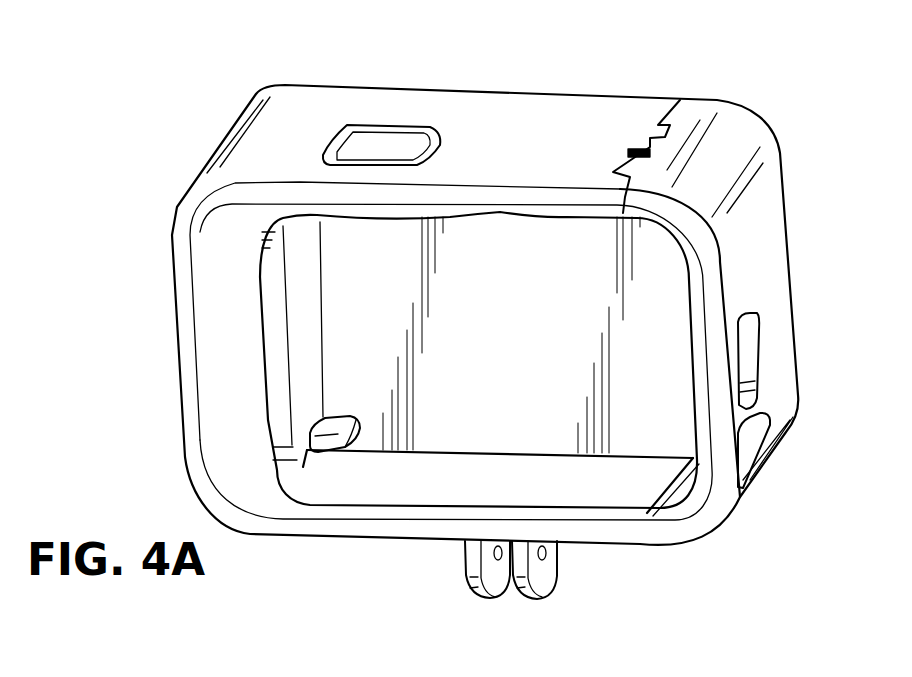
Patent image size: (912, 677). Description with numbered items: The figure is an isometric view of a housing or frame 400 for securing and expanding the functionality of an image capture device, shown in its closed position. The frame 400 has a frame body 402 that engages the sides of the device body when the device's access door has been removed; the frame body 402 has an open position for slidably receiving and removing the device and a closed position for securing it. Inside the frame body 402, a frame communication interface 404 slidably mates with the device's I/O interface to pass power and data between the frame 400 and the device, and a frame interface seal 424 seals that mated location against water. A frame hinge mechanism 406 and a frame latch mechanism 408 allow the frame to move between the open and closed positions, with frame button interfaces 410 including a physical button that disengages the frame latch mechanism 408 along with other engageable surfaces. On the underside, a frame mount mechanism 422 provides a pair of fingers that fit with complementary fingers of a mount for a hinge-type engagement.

The frame 400 is at (158, 130).
The frame body 402 is at (530, 110).
The frame communication interface 404 is at (327, 443).
The frame hinge mechanism 406 is at (643, 140).
The frame latch mechanism 408 is at (660, 500).
The frame button interfaces 410 is at (374, 116).
The frame mount mechanism 422 is at (543, 575).
The frame interface seal 424 is at (278, 377).